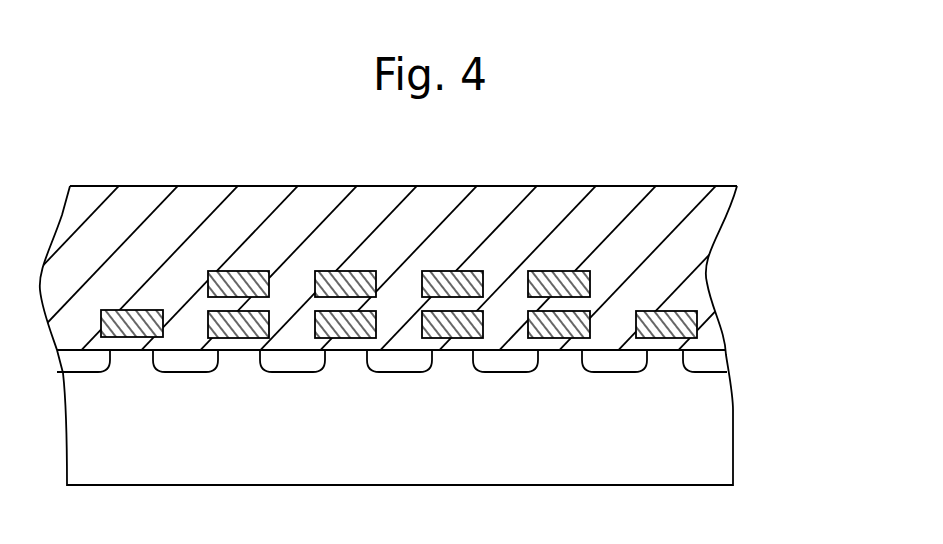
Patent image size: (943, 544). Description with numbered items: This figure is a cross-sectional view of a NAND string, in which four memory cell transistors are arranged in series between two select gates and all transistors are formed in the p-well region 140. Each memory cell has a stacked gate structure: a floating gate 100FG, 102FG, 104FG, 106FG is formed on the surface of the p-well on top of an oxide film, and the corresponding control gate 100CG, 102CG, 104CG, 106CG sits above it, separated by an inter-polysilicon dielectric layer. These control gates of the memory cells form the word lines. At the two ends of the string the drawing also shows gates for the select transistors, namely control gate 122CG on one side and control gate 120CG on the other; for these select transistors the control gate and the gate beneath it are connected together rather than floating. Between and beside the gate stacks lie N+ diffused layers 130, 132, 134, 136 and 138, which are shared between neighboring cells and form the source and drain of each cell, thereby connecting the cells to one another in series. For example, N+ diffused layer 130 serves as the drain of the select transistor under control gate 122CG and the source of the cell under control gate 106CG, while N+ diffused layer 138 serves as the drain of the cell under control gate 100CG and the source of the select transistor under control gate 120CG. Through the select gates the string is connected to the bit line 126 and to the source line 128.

The control gate 122CG is at (133, 310).
The control gate 106CG is at (243, 271).
The control gate 104CG is at (350, 271).
The control gate 102CG is at (457, 271).
The control gate 100CG is at (560, 271).
The control gate 120CG is at (663, 311).
The floating gate 106FG is at (240, 338).
The floating gate 104FG is at (350, 338).
The floating gate 102FG is at (455, 338).
The floating gate 100FG is at (563, 338).
The source line 128 is at (88, 358).
The N+ diffused layer 130 is at (192, 358).
The N+ diffused layer 132 is at (294, 358).
The N+ diffused region 134 is at (403, 358).
The N+ diffused region 136 is at (510, 358).
The N+ diffused layer 138 is at (616, 358).
The bit line 126 is at (720, 363).
The p-well region 140 is at (722, 468).